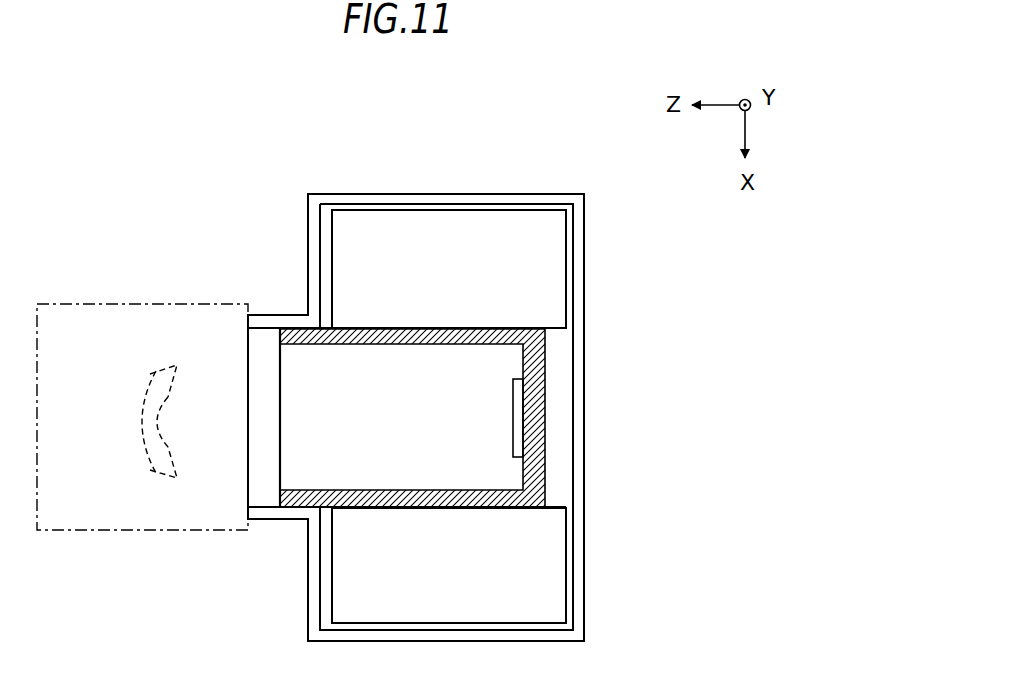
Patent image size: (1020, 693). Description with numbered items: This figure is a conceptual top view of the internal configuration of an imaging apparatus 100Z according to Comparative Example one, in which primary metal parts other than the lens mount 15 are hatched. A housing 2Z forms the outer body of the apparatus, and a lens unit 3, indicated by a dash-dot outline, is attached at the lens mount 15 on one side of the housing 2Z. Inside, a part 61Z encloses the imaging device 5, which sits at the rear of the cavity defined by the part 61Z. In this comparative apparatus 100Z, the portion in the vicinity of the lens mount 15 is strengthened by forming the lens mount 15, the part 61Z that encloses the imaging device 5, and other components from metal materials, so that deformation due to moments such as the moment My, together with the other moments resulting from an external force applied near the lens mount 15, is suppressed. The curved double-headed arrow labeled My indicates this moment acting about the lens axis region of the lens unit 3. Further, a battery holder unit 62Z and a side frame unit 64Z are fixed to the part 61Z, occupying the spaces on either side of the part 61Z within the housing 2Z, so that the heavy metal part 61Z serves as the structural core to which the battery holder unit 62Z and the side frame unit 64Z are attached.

The imaging apparatus 100Z is at (125, 90).
The housing 2Z is at (473, 193).
The battery holder unit 62Z is at (566, 233).
The side frame unit 64Z is at (567, 560).
The part that encloses the imaging device 61Z is at (544, 346).
The imaging device 5 is at (513, 418).
The lens mount 15 is at (248, 494).
The lens unit 3 is at (88, 304).
The moment My is at (141, 418).